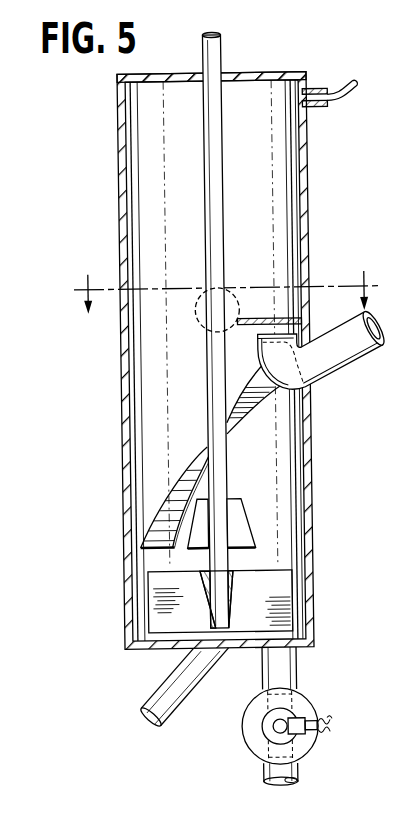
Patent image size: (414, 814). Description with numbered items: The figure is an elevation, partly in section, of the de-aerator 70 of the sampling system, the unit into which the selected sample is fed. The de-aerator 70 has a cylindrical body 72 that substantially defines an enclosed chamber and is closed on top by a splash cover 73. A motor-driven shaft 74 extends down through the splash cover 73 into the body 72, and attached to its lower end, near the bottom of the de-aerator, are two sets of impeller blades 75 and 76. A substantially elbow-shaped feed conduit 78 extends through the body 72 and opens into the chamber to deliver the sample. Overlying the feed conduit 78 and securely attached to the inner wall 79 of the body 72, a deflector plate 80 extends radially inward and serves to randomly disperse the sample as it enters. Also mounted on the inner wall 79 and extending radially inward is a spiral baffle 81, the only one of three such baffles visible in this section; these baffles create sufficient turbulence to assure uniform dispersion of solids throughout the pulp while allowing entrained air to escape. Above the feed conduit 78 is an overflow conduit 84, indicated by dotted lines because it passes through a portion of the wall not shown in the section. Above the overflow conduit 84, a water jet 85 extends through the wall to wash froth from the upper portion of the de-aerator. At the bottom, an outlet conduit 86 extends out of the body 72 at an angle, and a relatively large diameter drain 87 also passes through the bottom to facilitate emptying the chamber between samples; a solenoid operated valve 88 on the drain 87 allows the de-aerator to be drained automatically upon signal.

The de-aerator 70 is at (336, 166).
The cylindrical body 72 is at (309, 227).
The splash cover 73 is at (291, 77).
The shaft 74 is at (220, 61).
The impeller blades 75 is at (245, 517).
The impeller blades 76 is at (250, 590).
The feed conduit 78 is at (361, 332).
The inner wall 79 is at (296, 263).
The deflector plate 80 is at (242, 318).
The spiral baffle 81 is at (207, 457).
The overflow conduit 84 is at (201, 292).
The water jet 85 is at (319, 88).
The outlet conduit 86 is at (162, 695).
The drain 87 is at (286, 670).
The solenoid operated valve 88 is at (298, 708).